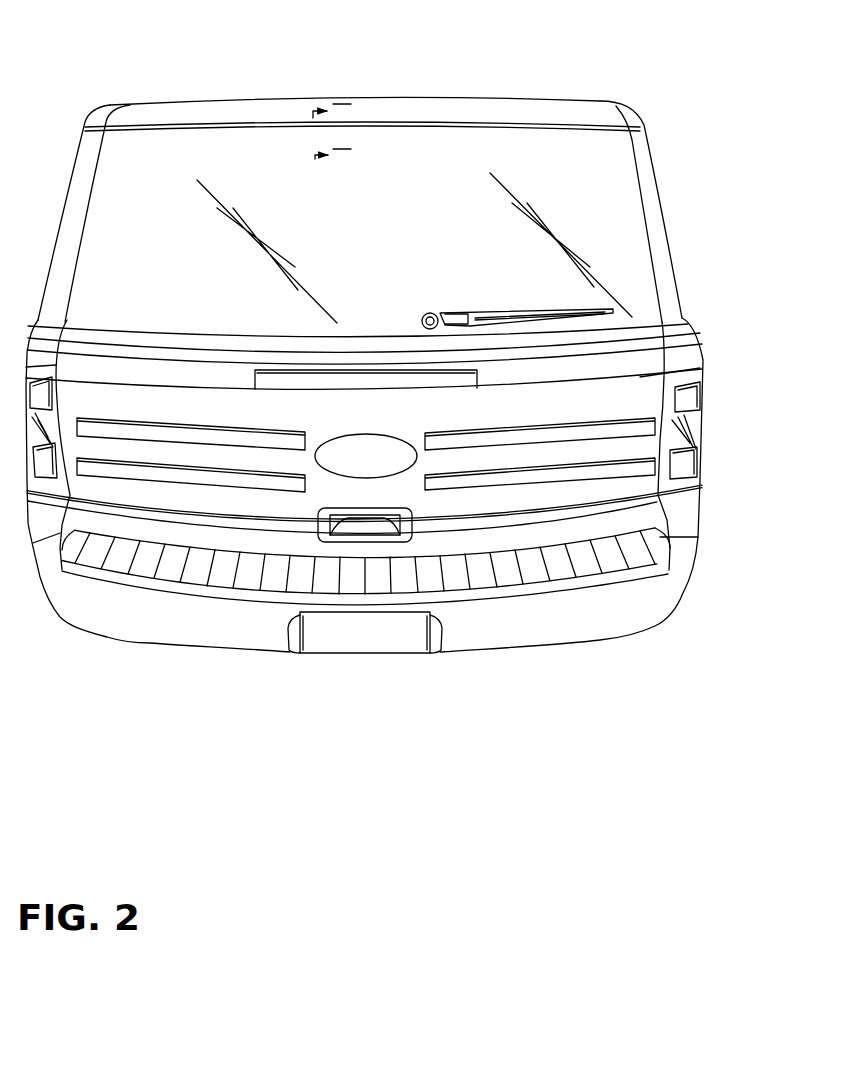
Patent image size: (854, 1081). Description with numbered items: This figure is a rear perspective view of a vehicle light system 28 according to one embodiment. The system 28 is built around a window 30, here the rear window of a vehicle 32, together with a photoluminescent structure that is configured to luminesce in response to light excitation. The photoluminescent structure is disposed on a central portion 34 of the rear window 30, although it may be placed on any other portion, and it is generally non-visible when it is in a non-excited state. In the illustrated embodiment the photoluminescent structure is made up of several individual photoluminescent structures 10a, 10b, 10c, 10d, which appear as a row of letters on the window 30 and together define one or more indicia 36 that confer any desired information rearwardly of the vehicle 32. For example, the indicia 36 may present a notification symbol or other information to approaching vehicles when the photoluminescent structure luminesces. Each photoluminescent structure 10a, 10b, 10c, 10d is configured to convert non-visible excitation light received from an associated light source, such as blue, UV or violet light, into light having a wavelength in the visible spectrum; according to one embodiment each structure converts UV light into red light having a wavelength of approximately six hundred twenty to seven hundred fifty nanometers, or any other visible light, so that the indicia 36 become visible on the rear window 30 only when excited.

The photoluminescent structure 10a is at (297, 157).
The photoluminescent structure 10b is at (365, 171).
The photoluminescent structure 10c is at (394, 138).
The photoluminescent structure 10d is at (433, 137).
The vehicle light system 28 is at (727, 174).
The window 30 is at (612, 240).
The vehicle 32 is at (647, 98).
The central portion 34 is at (368, 125).
The indicia 36 is at (410, 131).